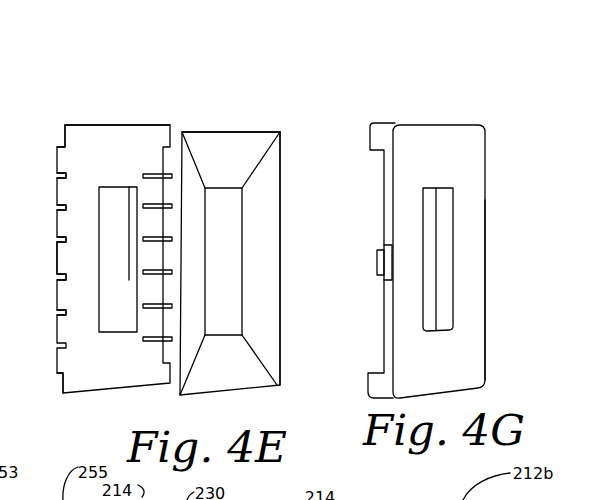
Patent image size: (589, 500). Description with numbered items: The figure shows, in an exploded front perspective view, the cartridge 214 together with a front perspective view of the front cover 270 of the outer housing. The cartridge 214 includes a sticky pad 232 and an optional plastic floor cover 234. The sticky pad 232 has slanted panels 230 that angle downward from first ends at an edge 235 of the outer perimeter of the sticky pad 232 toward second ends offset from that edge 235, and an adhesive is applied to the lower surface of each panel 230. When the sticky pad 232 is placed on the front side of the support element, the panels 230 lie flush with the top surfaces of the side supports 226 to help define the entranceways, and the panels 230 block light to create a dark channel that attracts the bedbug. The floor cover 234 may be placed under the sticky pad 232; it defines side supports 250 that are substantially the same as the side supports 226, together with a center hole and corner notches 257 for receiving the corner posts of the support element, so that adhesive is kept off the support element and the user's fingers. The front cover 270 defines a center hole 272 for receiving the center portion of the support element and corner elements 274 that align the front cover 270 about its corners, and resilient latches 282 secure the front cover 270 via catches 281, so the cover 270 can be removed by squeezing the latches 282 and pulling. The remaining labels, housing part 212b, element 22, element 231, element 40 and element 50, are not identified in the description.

In FIG. 4G, the housing half 212b is at (435, 148).
In FIG. 4E, the plate 214 is at (153, 128).
In FIG. 4E, the edge 22 is at (9, 118).
In FIG. 4E, the notch 226 is at (33, 195).
In FIG. 4E, the side face 230 is at (245, 152).
In FIG. 4E, the notch 231 is at (33, 158).
In FIG. 4E, the block body 232 is at (262, 217).
In FIG. 4E, the plate 234 is at (78, 134).
In FIG. 4E, the edge 235 is at (280, 163).
In FIG. 4E, the notch 40 is at (33, 275).
In FIG. 4E, the tab 250 is at (62, 273).
In FIG. 4E, the tab 50 is at (62, 312).
In FIG. 4E, the corner 257 is at (60, 108).
In FIG. 4G, the wall 270 is at (468, 258).
In FIG. 4G, the slot 272 is at (448, 232).
In FIG. 4G, the back plate 274 is at (370, 122).
In FIG. 4E, the edge 281 is at (28, 252).
In FIG. 4G, the tab 282 is at (377, 262).